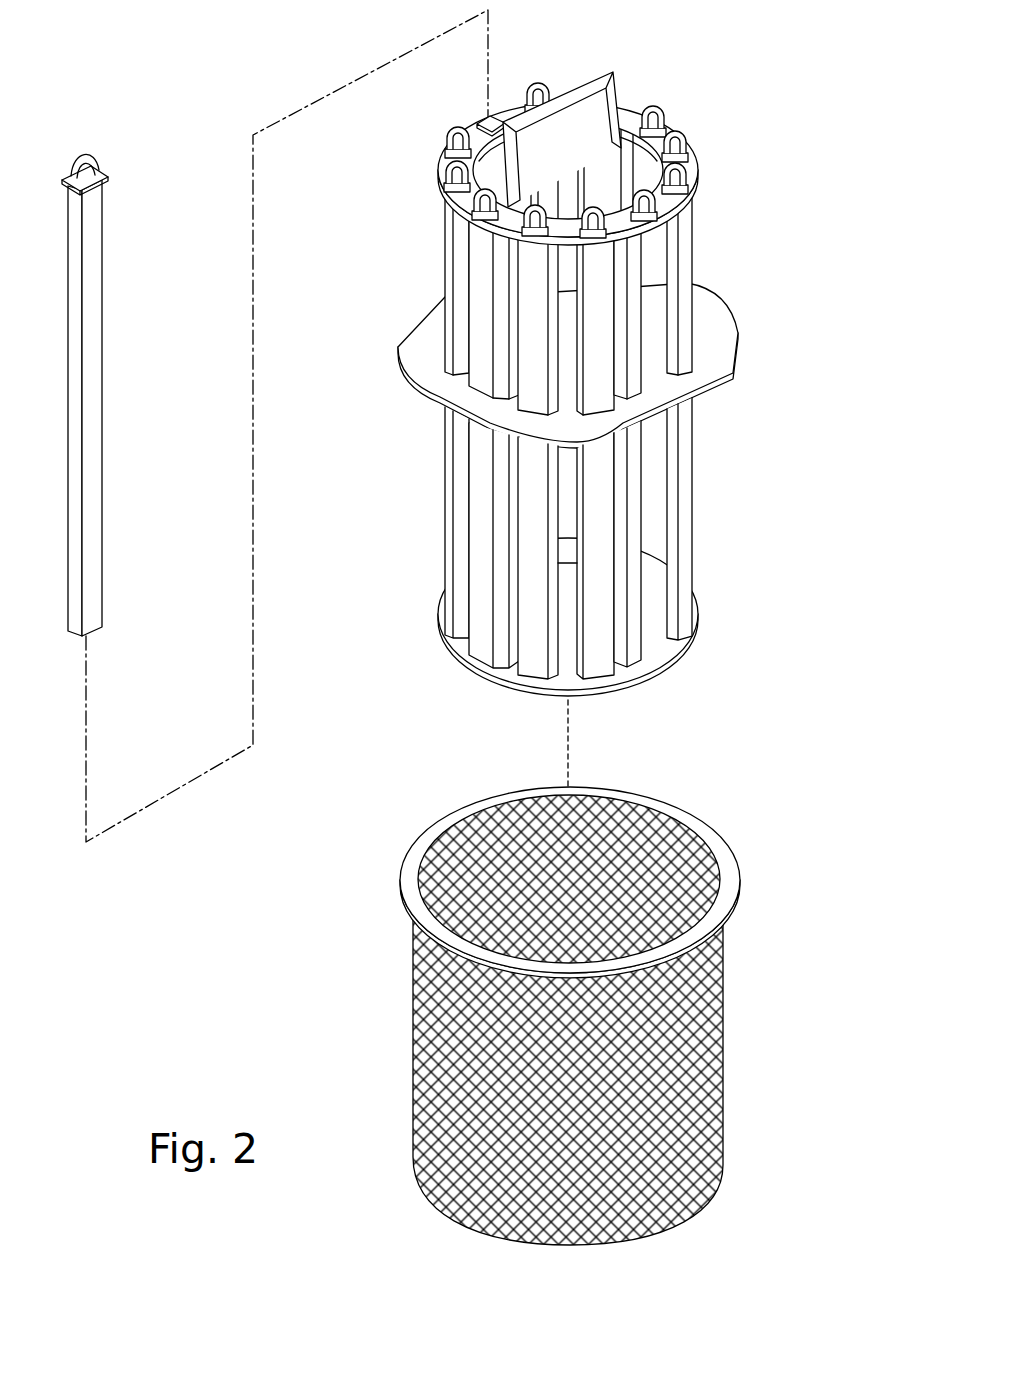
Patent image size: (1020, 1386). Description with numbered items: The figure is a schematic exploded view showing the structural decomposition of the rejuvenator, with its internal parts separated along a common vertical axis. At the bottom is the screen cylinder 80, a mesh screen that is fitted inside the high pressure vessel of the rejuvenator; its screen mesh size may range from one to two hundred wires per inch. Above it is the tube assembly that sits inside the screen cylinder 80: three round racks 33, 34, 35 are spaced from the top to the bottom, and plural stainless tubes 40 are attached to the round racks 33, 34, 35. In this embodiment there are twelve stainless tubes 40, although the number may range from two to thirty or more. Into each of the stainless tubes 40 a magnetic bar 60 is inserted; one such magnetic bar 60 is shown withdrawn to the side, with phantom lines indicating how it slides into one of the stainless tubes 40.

The round rack 33 is at (693, 163).
The round rack 34 is at (718, 340).
The round rack 35 is at (672, 641).
The stainless tubes 40 is at (687, 247).
The magnetic bars 60 is at (93, 395).
The screen cylinder 80 is at (413, 1006).